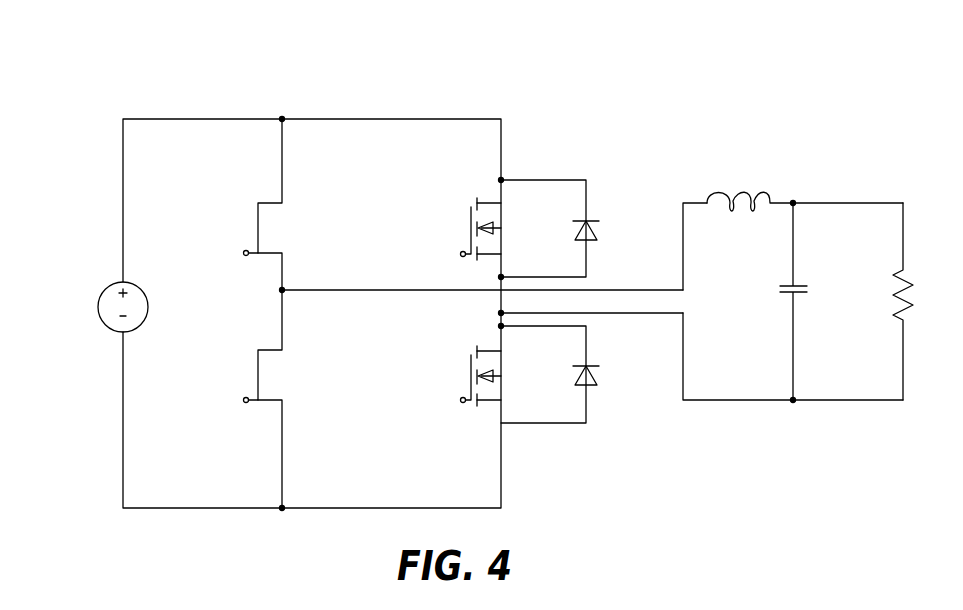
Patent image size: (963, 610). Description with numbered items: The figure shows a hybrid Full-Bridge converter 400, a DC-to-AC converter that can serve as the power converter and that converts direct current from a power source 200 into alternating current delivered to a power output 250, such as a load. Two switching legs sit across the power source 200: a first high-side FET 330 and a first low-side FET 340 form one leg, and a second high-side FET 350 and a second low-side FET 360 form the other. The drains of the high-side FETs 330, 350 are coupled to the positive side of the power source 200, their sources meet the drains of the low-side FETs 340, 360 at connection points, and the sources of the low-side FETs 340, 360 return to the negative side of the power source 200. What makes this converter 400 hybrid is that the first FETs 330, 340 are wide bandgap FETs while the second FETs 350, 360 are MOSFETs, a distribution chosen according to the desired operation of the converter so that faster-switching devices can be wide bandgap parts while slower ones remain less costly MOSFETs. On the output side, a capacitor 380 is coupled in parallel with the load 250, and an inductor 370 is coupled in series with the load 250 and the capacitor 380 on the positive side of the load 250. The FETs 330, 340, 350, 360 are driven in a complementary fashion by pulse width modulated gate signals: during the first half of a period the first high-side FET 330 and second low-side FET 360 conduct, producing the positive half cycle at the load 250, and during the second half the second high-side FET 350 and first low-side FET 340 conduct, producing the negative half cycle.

The hybrid Full-Bridge converter 400 is at (144, 64).
The power source 200 is at (98, 307).
The first high-side FET 330 is at (257, 230).
The first low-side FET 340 is at (257, 387).
The second high-side FET 350 is at (471, 228).
The second low-side FET 360 is at (471, 376).
The inductor 370 is at (770, 197).
The capacitor 380 is at (806, 292).
The power output 250 is at (912, 275).